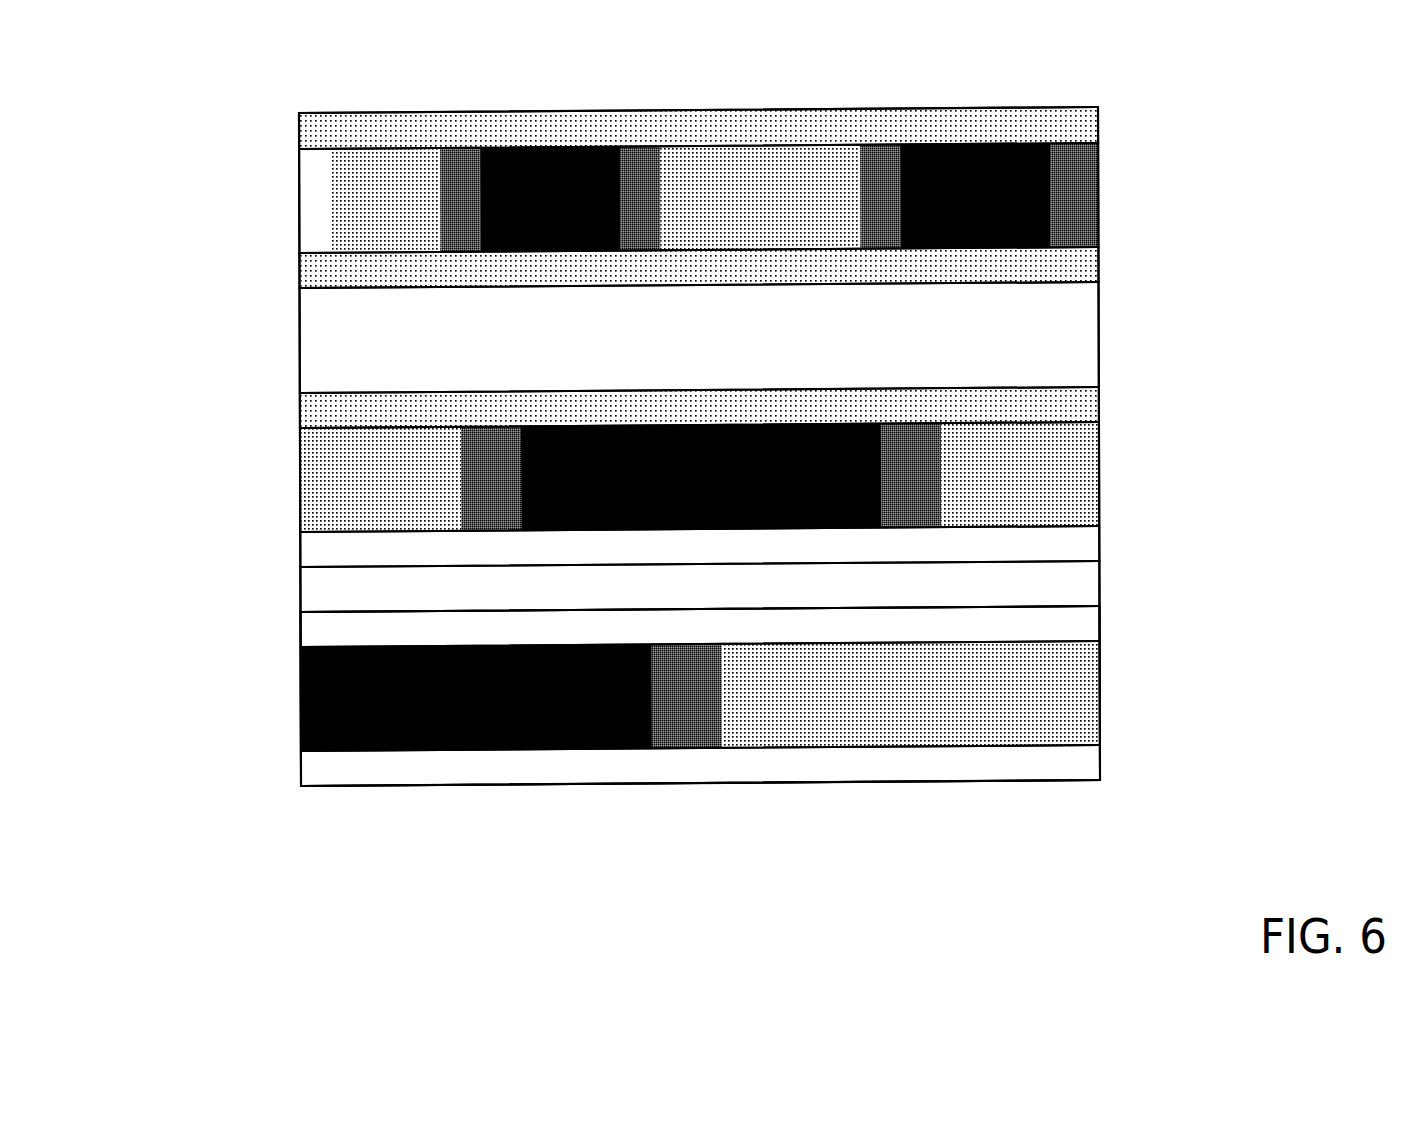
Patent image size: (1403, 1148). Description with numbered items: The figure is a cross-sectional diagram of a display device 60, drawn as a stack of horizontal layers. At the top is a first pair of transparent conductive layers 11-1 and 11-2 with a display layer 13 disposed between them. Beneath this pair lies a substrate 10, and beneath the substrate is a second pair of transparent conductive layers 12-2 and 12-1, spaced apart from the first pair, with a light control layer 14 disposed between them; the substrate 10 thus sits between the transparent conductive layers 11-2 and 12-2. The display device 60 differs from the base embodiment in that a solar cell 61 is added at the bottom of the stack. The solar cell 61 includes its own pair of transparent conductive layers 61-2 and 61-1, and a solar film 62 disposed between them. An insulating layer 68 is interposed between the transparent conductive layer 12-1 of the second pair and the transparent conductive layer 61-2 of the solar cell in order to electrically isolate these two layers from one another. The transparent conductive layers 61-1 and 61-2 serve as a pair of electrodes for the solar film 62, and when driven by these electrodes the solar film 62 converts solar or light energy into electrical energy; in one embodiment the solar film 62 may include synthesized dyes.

The display device 60 is at (247, 131).
The transparent conductive layer 11-1 is at (1098, 123).
The display layer 13 is at (1098, 202).
The transparent conductive layer 11-2 is at (1098, 262).
The substrate 10 is at (1098, 348).
The transparent conductive layer 12-2 is at (1098, 407).
The light control layer 14 is at (1098, 472).
The transparent conductive layer 12-1 is at (1098, 540).
The insulating layer 68 is at (1098, 579).
The solar cell 61 is at (290, 613).
The transparent conductive layer 61-2 is at (1098, 626).
The solar film 62 is at (1098, 692).
The transparent conductive layer 61-1 is at (1098, 760).